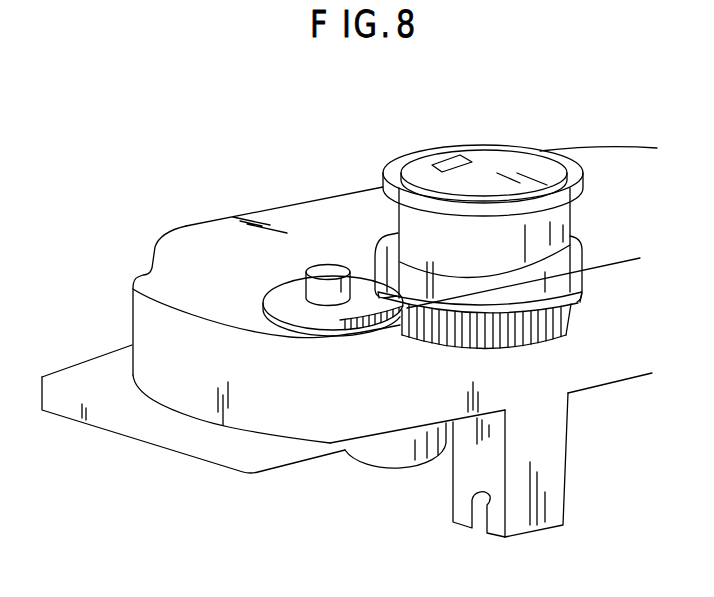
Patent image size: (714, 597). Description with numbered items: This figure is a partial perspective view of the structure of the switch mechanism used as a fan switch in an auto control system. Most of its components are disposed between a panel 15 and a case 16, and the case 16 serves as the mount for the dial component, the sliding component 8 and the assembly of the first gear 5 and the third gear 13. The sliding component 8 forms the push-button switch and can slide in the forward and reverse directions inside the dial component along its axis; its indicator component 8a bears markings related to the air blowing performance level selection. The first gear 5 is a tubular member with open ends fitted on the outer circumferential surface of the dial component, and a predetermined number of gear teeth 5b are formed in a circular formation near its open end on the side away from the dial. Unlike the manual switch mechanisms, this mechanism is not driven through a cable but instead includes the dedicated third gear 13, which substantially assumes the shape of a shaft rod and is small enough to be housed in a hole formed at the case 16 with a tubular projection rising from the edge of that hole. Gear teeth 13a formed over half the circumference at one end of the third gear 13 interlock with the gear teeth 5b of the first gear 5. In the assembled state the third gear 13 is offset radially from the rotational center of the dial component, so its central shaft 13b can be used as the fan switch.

The first gear 5 is at (580, 258).
The gear teeth 5b is at (577, 317).
The sliding component 8 is at (396, 213).
The indicator component 8a is at (485, 153).
The third gear 13 is at (277, 286).
The gear teeth 13a is at (357, 332).
The central shaft 13b is at (329, 270).
The panel 15 is at (605, 172).
The case 16 is at (157, 433).